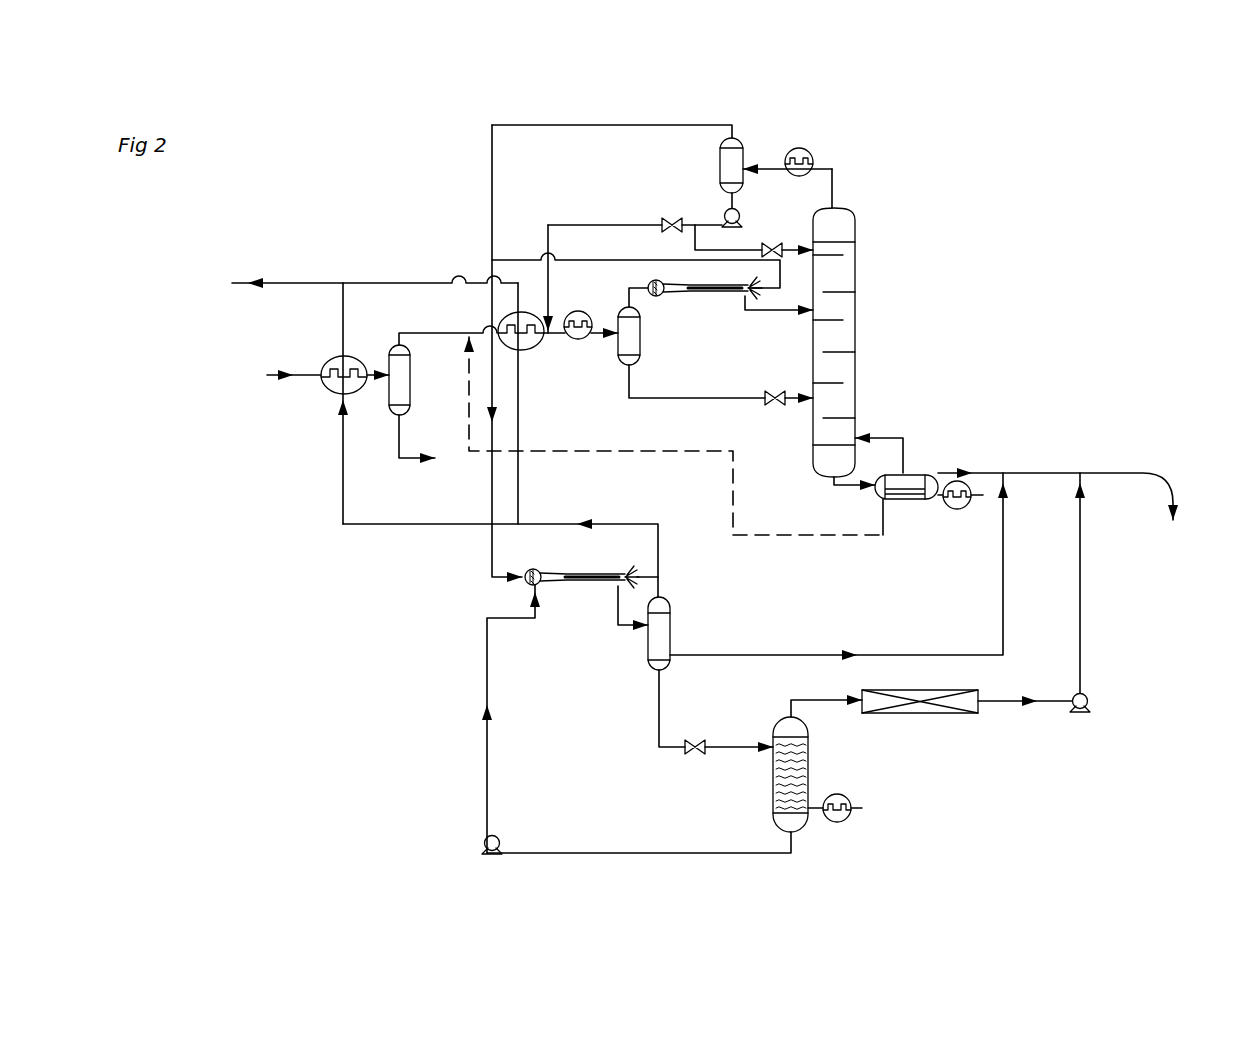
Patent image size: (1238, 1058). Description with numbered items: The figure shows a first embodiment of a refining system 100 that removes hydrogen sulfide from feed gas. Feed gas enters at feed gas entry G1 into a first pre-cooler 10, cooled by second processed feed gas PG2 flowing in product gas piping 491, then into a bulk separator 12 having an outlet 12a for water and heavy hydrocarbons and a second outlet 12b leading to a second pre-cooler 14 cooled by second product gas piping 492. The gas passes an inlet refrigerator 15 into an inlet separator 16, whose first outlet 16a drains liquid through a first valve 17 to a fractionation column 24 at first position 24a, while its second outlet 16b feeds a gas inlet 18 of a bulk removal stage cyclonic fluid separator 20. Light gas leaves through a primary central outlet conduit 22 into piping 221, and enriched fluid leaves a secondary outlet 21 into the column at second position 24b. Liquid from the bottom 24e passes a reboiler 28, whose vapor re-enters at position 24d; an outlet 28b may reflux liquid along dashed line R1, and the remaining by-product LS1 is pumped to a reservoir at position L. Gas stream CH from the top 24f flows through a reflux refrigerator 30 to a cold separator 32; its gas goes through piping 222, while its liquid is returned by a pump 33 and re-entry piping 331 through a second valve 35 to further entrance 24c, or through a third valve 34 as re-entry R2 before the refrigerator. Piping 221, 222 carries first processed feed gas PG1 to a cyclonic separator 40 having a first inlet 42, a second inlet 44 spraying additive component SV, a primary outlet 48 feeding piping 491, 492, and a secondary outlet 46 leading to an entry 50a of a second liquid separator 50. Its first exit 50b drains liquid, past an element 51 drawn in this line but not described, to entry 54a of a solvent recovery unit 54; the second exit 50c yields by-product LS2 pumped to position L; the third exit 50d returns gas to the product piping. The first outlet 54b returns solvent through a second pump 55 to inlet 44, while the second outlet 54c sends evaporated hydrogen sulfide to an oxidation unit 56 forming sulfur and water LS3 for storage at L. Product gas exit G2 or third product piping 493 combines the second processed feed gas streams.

The refining system 100 is at (1002, 248).
The first pre-cooler 10 is at (327, 387).
The bulk separator 12 is at (410, 401).
The outlet 12a is at (398, 430).
The second outlet 12b is at (419, 333).
The second pre-cooler 14 is at (536, 343).
The inlet refrigerator 15 is at (580, 338).
The inlet separator 16 is at (640, 345).
The first outlet 16a is at (672, 398).
The second outlet 16b is at (628, 297).
The first valve 17 is at (771, 405).
The gas inlet 18 is at (645, 280).
The H2S bulk removal stage cyclonic fluid separator 20 is at (697, 296).
The secondary outlet 21 is at (745, 312).
The primary central outlet conduit 22 is at (760, 298).
The fractionation column 24 is at (856, 328).
The first position 24a is at (810, 402).
The second position 24b is at (800, 315).
The further entrance 24c is at (812, 256).
The position 24d is at (866, 437).
The bottom 24e is at (832, 478).
The top 24f is at (834, 190).
The reboiler 28 is at (906, 499).
The outlet 28b is at (880, 499).
The reflux refrigerator 30 is at (812, 152).
The cold separator 32 is at (744, 160).
The pump 33 is at (742, 217).
The third valve 34 is at (673, 218).
The second valve 35 is at (785, 242).
The cyclonic separator 40 is at (543, 585).
The first inlet 42 is at (505, 575).
The second inlet 44 is at (527, 618).
The secondary outlet 46 is at (616, 595).
The primary central outlet conduit 48 is at (643, 576).
The second liquid separator 50 is at (671, 618).
The entry 50a is at (648, 632).
The first exit 50b is at (660, 676).
The second exit 50c is at (672, 660).
The third exit 50d is at (660, 596).
The valve 51 is at (705, 742).
The solvent recovery unit 54 is at (773, 795).
The entry 54a is at (762, 744).
The first outlet 54b is at (794, 838).
The second outlet 54c is at (795, 716).
The second pump 55 is at (498, 840).
The oxidation unit 56 is at (930, 714).
The piping 221 is at (672, 258).
The piping 222 is at (614, 125).
The re-entry piping 331 is at (718, 248).
The product gas piping 491 is at (416, 524).
The second product gas piping 492 is at (520, 470).
The third product piping 493 is at (292, 283).
The feed gas entry G1 is at (282, 373).
The product gas exit G2 is at (252, 280).
The gas stream containing hydrocarbon and H2S CH is at (800, 148).
The reflux R1 is at (673, 452).
The re-entry R2 is at (580, 225).
The first processed feed gas stream PG1 is at (498, 414).
The second processed feed gas PG2 is at (585, 521).
The liquid H2S components by-product LS1 is at (954, 473).
The liquid H2S components by-product LS2 is at (838, 654).
The mixture of sulfur and water LS3 is at (1025, 701).
The additive component SV is at (491, 714).
The reservoir position L is at (1178, 498).